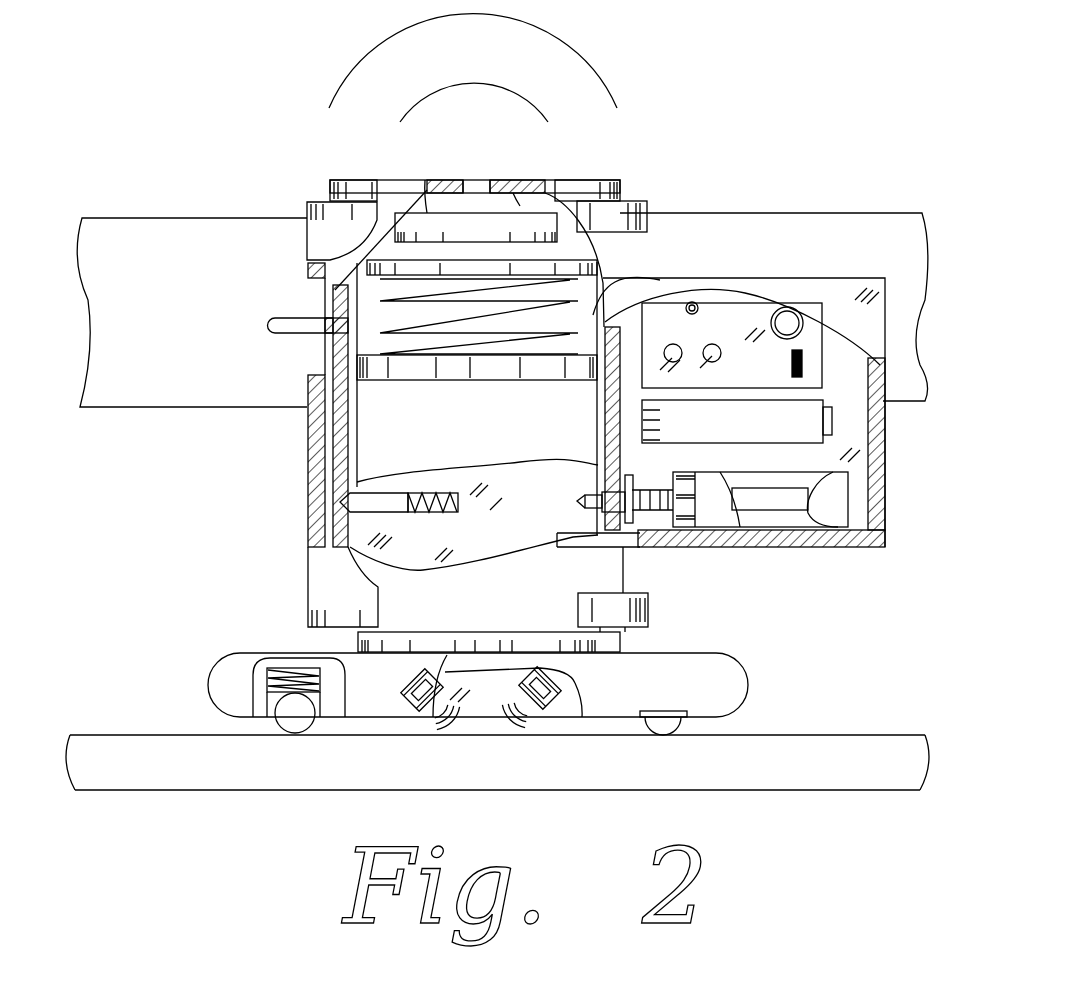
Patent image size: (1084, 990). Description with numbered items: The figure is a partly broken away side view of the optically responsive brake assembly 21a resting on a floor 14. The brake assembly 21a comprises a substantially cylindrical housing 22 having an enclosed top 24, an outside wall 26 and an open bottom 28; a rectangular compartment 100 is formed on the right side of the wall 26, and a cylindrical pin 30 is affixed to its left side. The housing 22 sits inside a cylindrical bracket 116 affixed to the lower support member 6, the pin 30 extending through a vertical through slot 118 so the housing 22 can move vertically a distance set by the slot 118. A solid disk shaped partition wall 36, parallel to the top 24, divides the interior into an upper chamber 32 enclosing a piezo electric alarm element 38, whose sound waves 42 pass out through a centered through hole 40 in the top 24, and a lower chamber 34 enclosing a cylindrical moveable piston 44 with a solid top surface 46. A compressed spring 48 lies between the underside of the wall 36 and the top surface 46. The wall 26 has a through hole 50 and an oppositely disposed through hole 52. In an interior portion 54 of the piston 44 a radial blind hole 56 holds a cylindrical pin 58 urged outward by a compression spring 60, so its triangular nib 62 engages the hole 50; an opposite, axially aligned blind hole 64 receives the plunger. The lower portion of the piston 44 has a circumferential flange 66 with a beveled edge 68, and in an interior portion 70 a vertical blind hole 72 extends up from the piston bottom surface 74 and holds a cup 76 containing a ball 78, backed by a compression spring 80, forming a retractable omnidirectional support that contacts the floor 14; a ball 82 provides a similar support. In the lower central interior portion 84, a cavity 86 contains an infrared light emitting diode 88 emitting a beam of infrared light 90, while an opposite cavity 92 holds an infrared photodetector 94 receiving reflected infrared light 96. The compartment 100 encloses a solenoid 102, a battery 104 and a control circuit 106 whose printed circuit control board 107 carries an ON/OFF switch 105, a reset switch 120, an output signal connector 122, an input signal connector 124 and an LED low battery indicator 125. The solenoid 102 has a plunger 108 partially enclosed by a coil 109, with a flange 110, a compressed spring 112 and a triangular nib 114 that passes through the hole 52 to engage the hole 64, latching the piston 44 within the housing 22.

The lower support member 6 is at (825, 212).
The floor 14 is at (163, 735).
The brake assembly 21a is at (205, 638).
The housing 22 is at (622, 188).
The enclosed top 24 is at (427, 192).
The outside wall 26 is at (333, 542).
The open bottom 28 is at (320, 630).
The pin 30 is at (272, 322).
The upper chamber 32 is at (545, 182).
The lower chamber 34 is at (660, 285).
The partition wall 36 is at (545, 256).
The piezo electric alarm element 38 is at (400, 182).
The through hole 40 is at (485, 181).
The sound waves 42 is at (613, 98).
The piston 44 is at (357, 404).
The top surface 46 is at (450, 357).
The compressed spring 48 is at (400, 328).
The through hole 50 is at (333, 482).
The through hole 52 is at (590, 530).
The interior portion 54 is at (505, 470).
The blind hole 56 is at (470, 512).
The pin 58 is at (389, 545).
The compression spring 60 is at (430, 512).
The nib 62 is at (343, 503).
The blind hole 64 is at (586, 496).
The circumferential flange 66 is at (668, 653).
The beveled edge 68 is at (748, 668).
The interior portion 70 is at (345, 668).
The blind hole 72 is at (343, 700).
The piston bottom surface 74 is at (245, 718).
The cup 76 is at (300, 732).
The ball 78 is at (275, 730).
The compression spring 80 is at (267, 686).
The ball 82 is at (648, 735).
The lower central interior portion 84 is at (575, 690).
The cavity 86 is at (450, 648).
The infrared light emitting diode 88 is at (410, 720).
The infrared light 90 is at (440, 728).
The cavity 92 is at (575, 700).
The infrared photodetector 94 is at (507, 686).
The reflected infrared light 96 is at (500, 730).
The compartment 100 is at (885, 547).
The solenoid 102 is at (840, 518).
The battery 104 is at (737, 421).
The ON/OFF switch 105 is at (790, 364).
The control circuit 106 is at (754, 345).
The printed circuit control board 107 is at (735, 388).
The plunger 108 is at (770, 527).
The coil 109 is at (750, 482).
The flange 110 is at (640, 488).
The compressed spring 112 is at (643, 533).
The nib 114 is at (580, 501).
The bracket 116 is at (307, 247).
The through slot 118 is at (307, 283).
The reset switch 120 is at (800, 307).
The output signal connector 122 is at (670, 346).
The input signal connector 124 is at (763, 321).
The LED low battery indicator 125 is at (700, 303).